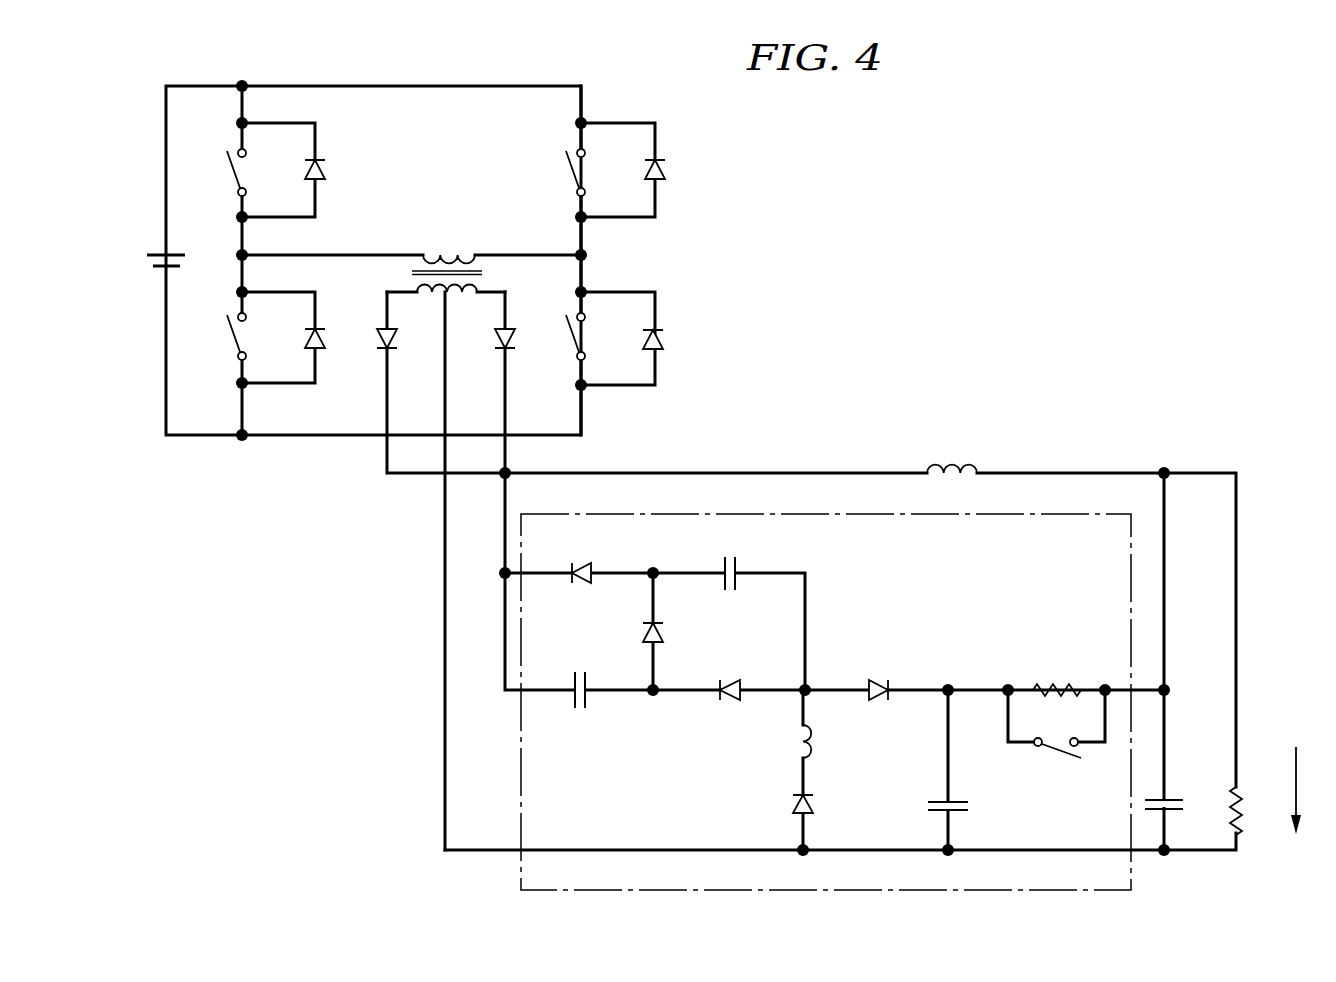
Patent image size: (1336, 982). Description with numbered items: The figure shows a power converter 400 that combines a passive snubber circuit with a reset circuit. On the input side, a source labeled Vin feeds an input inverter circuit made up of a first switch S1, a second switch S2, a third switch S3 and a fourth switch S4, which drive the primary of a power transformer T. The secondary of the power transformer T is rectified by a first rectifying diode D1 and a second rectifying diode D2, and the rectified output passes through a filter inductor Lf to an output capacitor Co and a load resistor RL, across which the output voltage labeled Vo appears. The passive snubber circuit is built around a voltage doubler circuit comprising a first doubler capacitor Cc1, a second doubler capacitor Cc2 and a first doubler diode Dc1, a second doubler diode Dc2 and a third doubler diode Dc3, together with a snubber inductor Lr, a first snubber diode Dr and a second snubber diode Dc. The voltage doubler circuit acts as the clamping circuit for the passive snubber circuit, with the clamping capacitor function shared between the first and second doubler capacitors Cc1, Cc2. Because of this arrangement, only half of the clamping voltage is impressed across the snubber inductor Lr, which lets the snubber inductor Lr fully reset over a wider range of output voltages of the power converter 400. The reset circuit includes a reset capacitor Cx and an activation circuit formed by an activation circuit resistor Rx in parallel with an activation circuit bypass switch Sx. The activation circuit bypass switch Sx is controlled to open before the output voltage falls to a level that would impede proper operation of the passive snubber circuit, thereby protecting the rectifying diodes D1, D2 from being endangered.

The power converter 400 is at (1256, 170).
The input voltage source Vin is at (150, 263).
The first switch S1 is at (264, 172).
The second switch S2 is at (262, 336).
The third switch S3 is at (602, 172).
The fourth switch S4 is at (601, 336).
The power transformer T is at (447, 258).
The first rectifying diode D1 is at (400, 340).
The second rectifying diode D2 is at (493, 340).
The filter inductor Lf is at (952, 455).
The second doubler diode Dc2 is at (581, 558).
The second doubler capacitor Cc2 is at (728, 561).
The third doubler diode Dc3 is at (672, 634).
The first doubler capacitor Cc1 is at (582, 677).
The first doubler diode Dc1 is at (730, 673).
The second snubber diode Dc is at (879, 675).
The snubber inductor Lr is at (822, 741).
The first snubber diode Dr is at (818, 806).
The reset capacitor Cx is at (962, 808).
The activation circuit resistor Rx is at (1057, 673).
The activation circuit bypass switch Sx is at (1057, 762).
The output capacitor Co is at (1178, 808).
The load resistor RL is at (1248, 811).
The output voltage Vo is at (1307, 790).